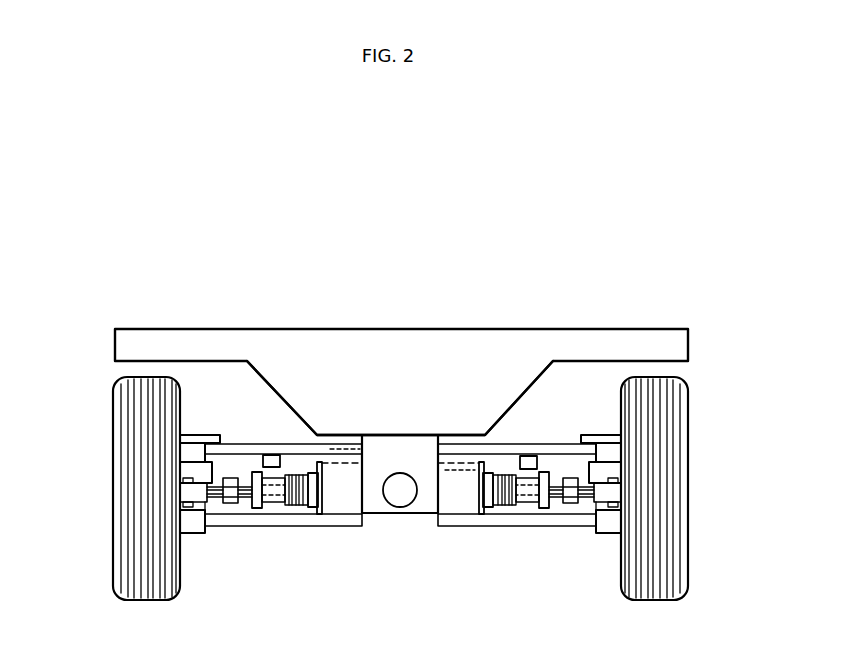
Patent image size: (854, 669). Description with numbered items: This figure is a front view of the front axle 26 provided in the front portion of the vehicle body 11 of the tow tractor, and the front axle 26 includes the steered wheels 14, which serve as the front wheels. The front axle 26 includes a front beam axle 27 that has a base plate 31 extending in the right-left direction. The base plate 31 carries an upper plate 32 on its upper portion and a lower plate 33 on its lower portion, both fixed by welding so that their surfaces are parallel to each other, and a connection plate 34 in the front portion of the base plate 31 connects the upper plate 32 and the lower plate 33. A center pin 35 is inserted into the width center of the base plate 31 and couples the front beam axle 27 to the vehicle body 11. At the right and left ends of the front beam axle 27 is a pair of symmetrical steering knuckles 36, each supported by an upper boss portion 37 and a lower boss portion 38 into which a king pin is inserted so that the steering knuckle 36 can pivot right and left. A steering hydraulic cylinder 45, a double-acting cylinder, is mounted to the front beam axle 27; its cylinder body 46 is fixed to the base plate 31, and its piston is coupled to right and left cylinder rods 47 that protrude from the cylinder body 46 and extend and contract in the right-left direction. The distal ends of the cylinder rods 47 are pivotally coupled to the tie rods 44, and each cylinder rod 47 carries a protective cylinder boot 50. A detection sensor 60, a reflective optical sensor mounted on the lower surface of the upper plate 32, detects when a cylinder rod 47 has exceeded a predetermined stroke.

The vehicle body 11 is at (296, 329).
The steered wheels 14 is at (142, 602).
The front axle 26 is at (561, 391).
The front beam axle 27 is at (318, 530).
The base plate 31 is at (411, 516).
The upper plate 32 is at (508, 447).
The lower plate 33 is at (470, 527).
The connection plate 34 is at (350, 514).
The center pin 35 is at (401, 492).
The steering knuckles 36 is at (190, 472).
The upper boss portion 37 is at (192, 453).
The lower boss portion 38 is at (192, 520).
The tie rods 44 is at (221, 505).
The steering hydraulic cylinder 45 is at (464, 452).
The cylinder body 46 is at (346, 447).
The cylinder rods 47 is at (273, 506).
The cylinder boot 50 is at (294, 507).
The detection sensor 60 is at (266, 456).